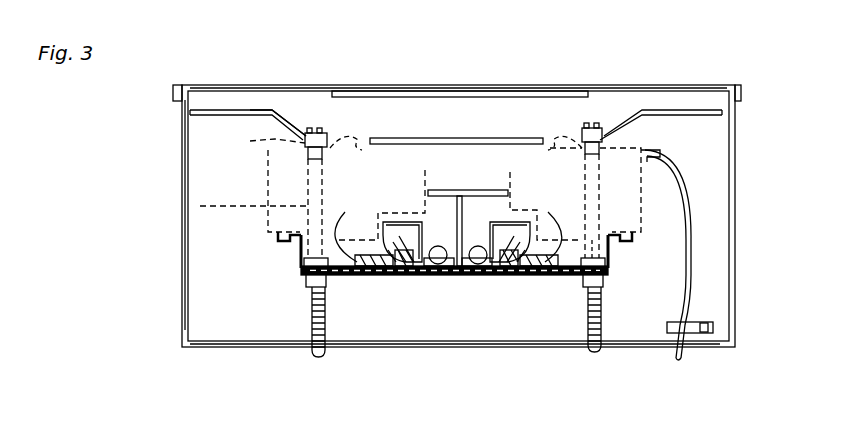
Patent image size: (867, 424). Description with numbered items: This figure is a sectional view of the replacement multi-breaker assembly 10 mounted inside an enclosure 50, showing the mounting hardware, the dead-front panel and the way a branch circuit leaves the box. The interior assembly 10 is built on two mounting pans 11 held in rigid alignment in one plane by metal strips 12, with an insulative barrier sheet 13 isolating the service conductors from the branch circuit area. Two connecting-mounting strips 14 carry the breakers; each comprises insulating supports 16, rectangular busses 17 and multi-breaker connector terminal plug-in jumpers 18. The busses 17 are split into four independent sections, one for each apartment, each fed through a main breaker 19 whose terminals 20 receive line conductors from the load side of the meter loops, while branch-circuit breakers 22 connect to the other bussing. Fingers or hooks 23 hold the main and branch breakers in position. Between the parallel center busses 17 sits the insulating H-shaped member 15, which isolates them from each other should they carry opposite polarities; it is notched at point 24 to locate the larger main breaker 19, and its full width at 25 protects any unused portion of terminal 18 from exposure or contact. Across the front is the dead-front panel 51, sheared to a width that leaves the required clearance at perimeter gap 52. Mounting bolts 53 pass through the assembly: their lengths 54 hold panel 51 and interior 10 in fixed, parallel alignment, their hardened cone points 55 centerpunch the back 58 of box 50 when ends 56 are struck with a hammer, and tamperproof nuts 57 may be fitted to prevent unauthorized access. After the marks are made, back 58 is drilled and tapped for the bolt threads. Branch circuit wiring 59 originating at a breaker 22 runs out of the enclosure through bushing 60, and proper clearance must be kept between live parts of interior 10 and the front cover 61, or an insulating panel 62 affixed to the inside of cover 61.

The replacement multi-breaker assembly 10 is at (300, 280).
The mounting pan 11 is at (300, 262).
The metal strip 12 is at (395, 278).
The insulative barrier sheet 13 is at (596, 240).
The connecting-mounting strip 14 is at (328, 288).
The insulating H-shaped member 15 is at (474, 192).
The insulating support 16 is at (378, 278).
The rectangular buss 17 is at (465, 292).
The multi-breaker connector terminal plug-in jumper 18 is at (398, 220).
The main breaker 19 is at (264, 190).
The terminal 20 is at (268, 142).
The branch-circuit breaker 22 is at (672, 160).
The finger or hook 23 is at (278, 240).
The notch 24 is at (425, 190).
The full-width portion of H-section 25 is at (510, 178).
The enclosure 50 is at (738, 170).
The dead-front panel 51 is at (688, 110).
The perimeter gap 52 is at (186, 112).
The mounting bolt 53 is at (312, 297).
The bolt length 54 is at (188, 216).
The hardened cone point 55 is at (312, 350).
The back of box 58 is at (412, 345).
The bolt end 56 is at (322, 128).
The tamperproof nut 57 is at (310, 128).
The branch circuit wiring 59 is at (692, 280).
The bushing 60 is at (712, 322).
The front cover 61 is at (634, 86).
The insulating panel 62 is at (448, 90).